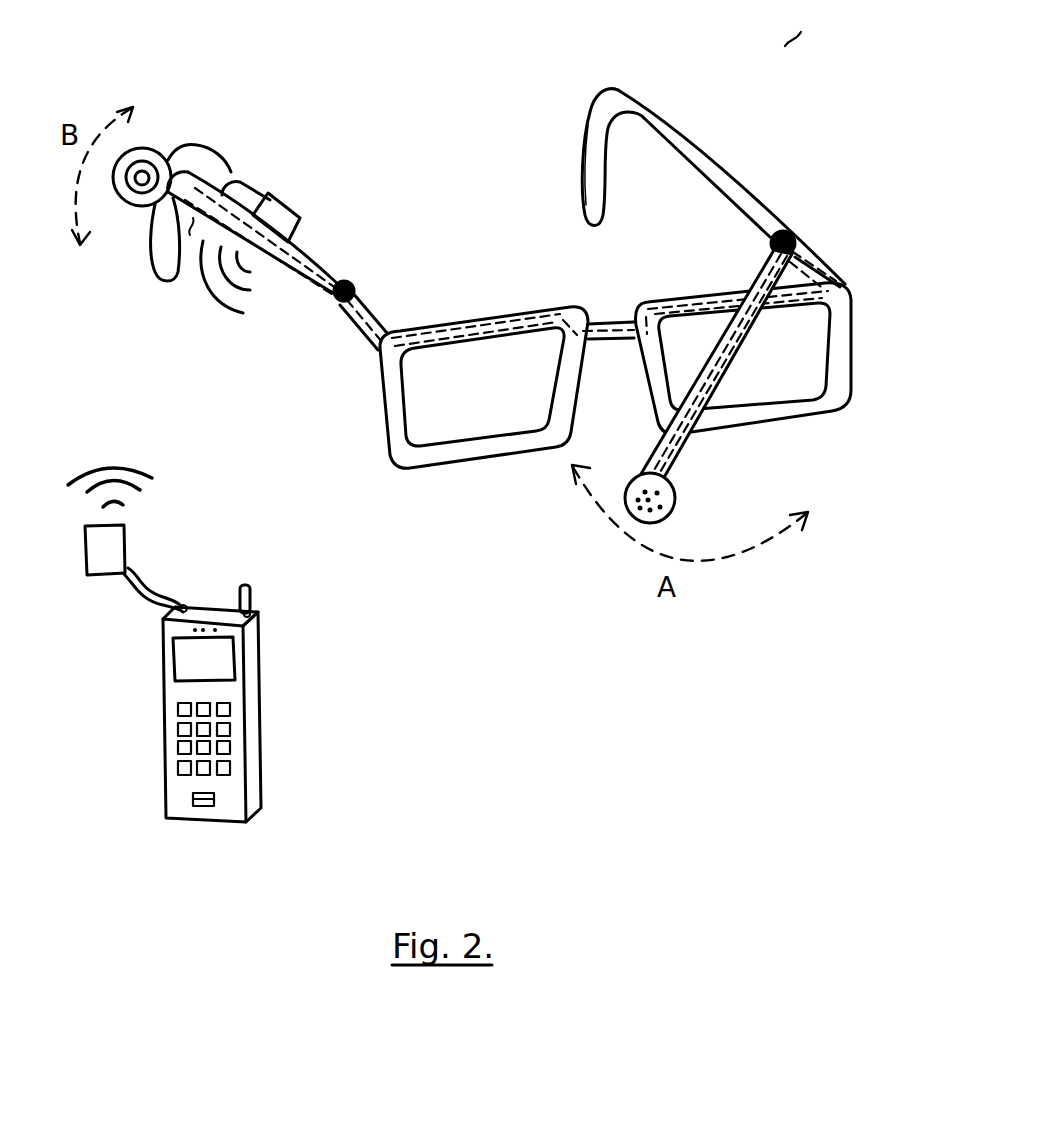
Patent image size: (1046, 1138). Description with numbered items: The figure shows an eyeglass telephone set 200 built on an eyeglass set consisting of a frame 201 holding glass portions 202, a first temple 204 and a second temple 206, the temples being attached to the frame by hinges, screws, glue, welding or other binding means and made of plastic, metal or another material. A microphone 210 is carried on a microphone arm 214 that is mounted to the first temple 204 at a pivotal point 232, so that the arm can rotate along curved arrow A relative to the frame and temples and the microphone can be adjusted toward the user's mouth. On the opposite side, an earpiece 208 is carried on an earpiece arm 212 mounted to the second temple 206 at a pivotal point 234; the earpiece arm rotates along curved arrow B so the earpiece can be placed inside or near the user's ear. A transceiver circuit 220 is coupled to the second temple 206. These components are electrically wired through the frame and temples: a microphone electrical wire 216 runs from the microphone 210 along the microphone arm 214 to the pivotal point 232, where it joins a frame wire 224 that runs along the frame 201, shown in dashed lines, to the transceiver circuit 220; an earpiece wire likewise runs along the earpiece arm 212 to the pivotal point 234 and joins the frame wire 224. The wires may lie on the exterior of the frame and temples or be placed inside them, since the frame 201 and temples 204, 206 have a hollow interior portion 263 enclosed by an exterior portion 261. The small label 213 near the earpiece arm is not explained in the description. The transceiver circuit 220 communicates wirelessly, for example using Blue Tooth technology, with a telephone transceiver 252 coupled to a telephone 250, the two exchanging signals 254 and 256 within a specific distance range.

The eyeglass telephone set 200 is at (823, 27).
The frame 201 is at (470, 462).
The glass portions 202 is at (408, 398).
The first temple 204 is at (677, 136).
The second temple 206 is at (229, 170).
The earpiece 208 is at (149, 148).
The microphone 210 is at (671, 517).
The earpiece arm 212 is at (360, 170).
The speaker arm wire 213 is at (198, 236).
The microphone arm 214 is at (720, 367).
The microphone electrical wire 216 is at (727, 370).
The transceiver circuit 220 is at (297, 212).
The frame wire 224 is at (312, 248).
The pivotal point 232 is at (795, 231).
The pivotal point 234 is at (338, 300).
The telephone 250 is at (260, 702).
The telephone transceiver 252 is at (127, 540).
The signal 254 is at (121, 462).
The signal 256 is at (215, 308).
The exterior portion 261 is at (615, 88).
The interior portion 263 is at (587, 140).